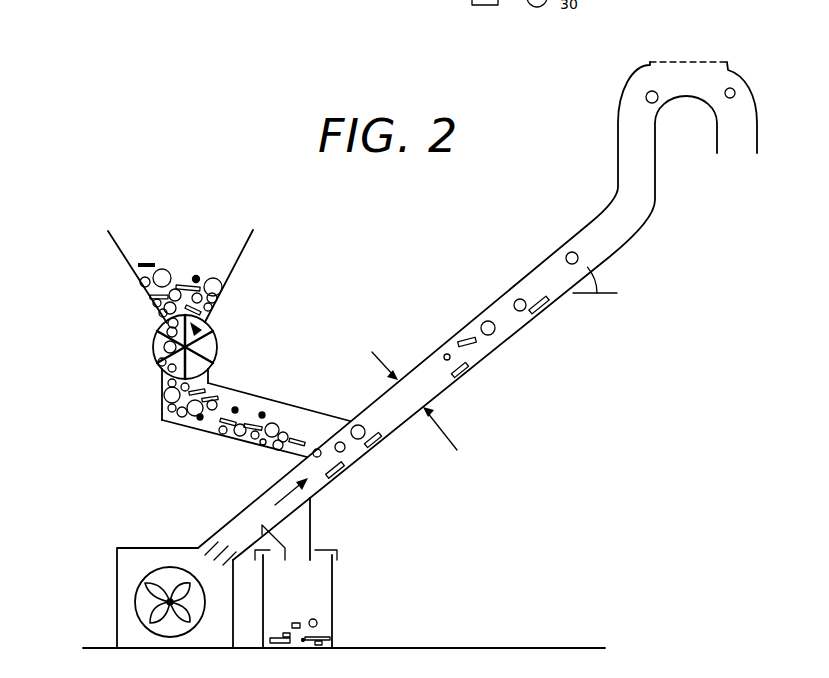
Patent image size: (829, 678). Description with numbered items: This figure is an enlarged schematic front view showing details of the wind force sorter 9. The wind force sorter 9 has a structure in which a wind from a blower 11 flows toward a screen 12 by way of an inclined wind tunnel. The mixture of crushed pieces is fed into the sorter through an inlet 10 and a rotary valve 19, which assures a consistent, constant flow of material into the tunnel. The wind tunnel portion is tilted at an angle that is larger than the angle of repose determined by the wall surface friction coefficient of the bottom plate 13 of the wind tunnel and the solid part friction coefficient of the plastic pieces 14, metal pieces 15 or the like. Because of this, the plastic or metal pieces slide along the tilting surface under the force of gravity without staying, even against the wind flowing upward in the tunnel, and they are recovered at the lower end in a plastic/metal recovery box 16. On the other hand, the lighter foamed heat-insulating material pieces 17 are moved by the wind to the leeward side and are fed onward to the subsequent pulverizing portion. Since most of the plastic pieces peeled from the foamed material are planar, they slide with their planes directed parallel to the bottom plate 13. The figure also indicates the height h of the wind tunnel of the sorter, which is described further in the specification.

The wind force sorter 9 is at (474, 320).
The inlet 10 is at (130, 273).
The blower 11 is at (137, 600).
The screen 12 is at (688, 60).
The bottom plate 13 is at (498, 348).
The plastic pieces 14 is at (185, 284).
The metal pieces 15 is at (143, 262).
The plastic/metal recovery box 16 is at (333, 594).
The foamed heat-insulating material pieces 17 is at (215, 278).
The rotary valve 19 is at (218, 347).
The height of the wind tunnel h is at (417, 401).